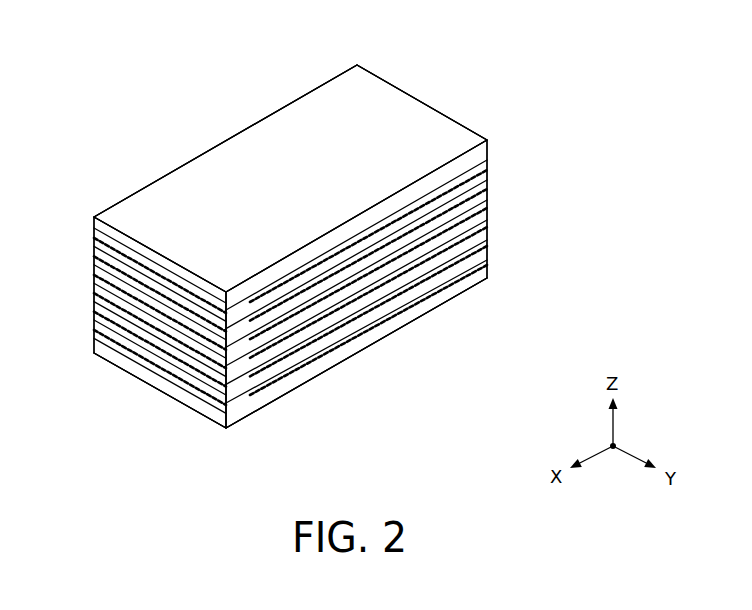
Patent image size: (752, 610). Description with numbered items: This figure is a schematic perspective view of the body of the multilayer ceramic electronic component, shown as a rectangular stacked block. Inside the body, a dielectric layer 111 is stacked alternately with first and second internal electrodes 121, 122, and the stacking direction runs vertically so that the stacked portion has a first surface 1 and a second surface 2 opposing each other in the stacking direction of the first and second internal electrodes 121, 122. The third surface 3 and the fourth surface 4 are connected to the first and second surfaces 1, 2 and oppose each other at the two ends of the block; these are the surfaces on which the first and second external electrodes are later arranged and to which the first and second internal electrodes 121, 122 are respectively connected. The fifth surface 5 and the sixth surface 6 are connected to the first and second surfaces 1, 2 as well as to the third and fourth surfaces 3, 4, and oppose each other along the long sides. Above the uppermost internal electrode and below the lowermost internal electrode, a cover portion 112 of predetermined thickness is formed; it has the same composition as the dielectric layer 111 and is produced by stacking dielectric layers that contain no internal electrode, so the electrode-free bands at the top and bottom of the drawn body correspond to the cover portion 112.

The first surface 1 is at (256, 142).
The second surface 2 is at (338, 356).
The third surface 3 is at (122, 346).
The fourth surface 4 is at (442, 129).
The fifth surface 5 is at (397, 305).
The sixth surface 6 is at (167, 203).
The dielectric layer 111 is at (480, 202).
The cover portion 112 is at (478, 162).
The first internal electrode 121 is at (480, 178).
The second internal electrode 122 is at (480, 230).